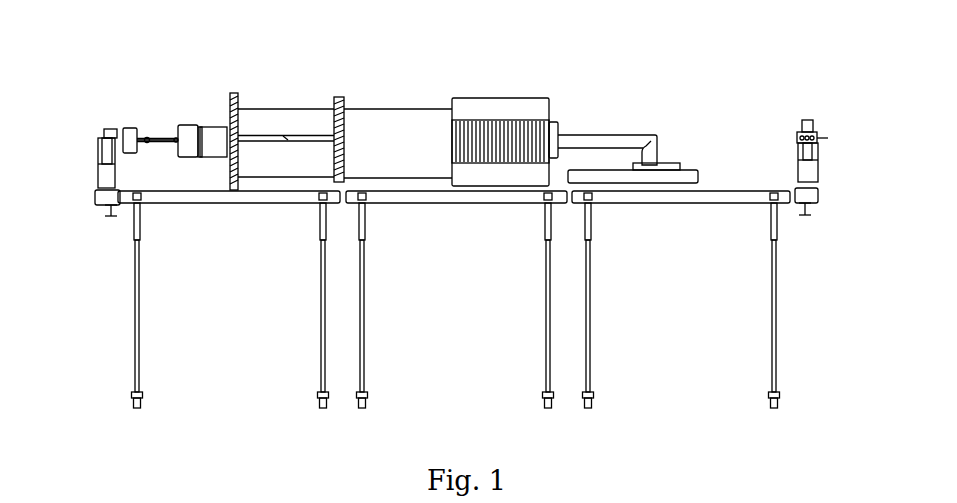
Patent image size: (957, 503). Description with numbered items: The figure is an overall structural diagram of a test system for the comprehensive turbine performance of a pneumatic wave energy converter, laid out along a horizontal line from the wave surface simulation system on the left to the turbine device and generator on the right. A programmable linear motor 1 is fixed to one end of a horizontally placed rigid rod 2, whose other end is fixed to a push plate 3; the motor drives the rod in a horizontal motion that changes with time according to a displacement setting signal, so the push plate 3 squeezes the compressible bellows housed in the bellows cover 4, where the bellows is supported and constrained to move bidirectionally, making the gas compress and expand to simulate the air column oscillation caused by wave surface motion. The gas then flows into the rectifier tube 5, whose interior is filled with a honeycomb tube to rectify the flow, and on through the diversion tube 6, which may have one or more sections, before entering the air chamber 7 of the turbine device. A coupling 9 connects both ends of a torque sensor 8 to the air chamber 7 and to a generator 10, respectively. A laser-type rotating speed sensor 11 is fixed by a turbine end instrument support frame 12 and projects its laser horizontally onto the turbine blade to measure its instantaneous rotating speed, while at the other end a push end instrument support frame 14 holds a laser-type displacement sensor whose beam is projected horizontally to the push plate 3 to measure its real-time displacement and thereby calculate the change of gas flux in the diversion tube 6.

The programmable linear motor 1 is at (680, 163).
The rigid rod 2 is at (612, 135).
The push plate 3 is at (549, 124).
The bellows cover 4 is at (530, 97).
The rectifier tube 5 is at (390, 109).
The diversion tube 6 is at (295, 108).
The air chamber 7 is at (217, 127).
The torque sensor 8 is at (168, 138).
The coupling 9 is at (155, 137).
The generator 10 is at (128, 128).
The laser-type rotating speed sensor 11 is at (103, 133).
The turbine end instrument support frame 12 is at (98, 178).
The push end instrument support frame 14 is at (820, 182).